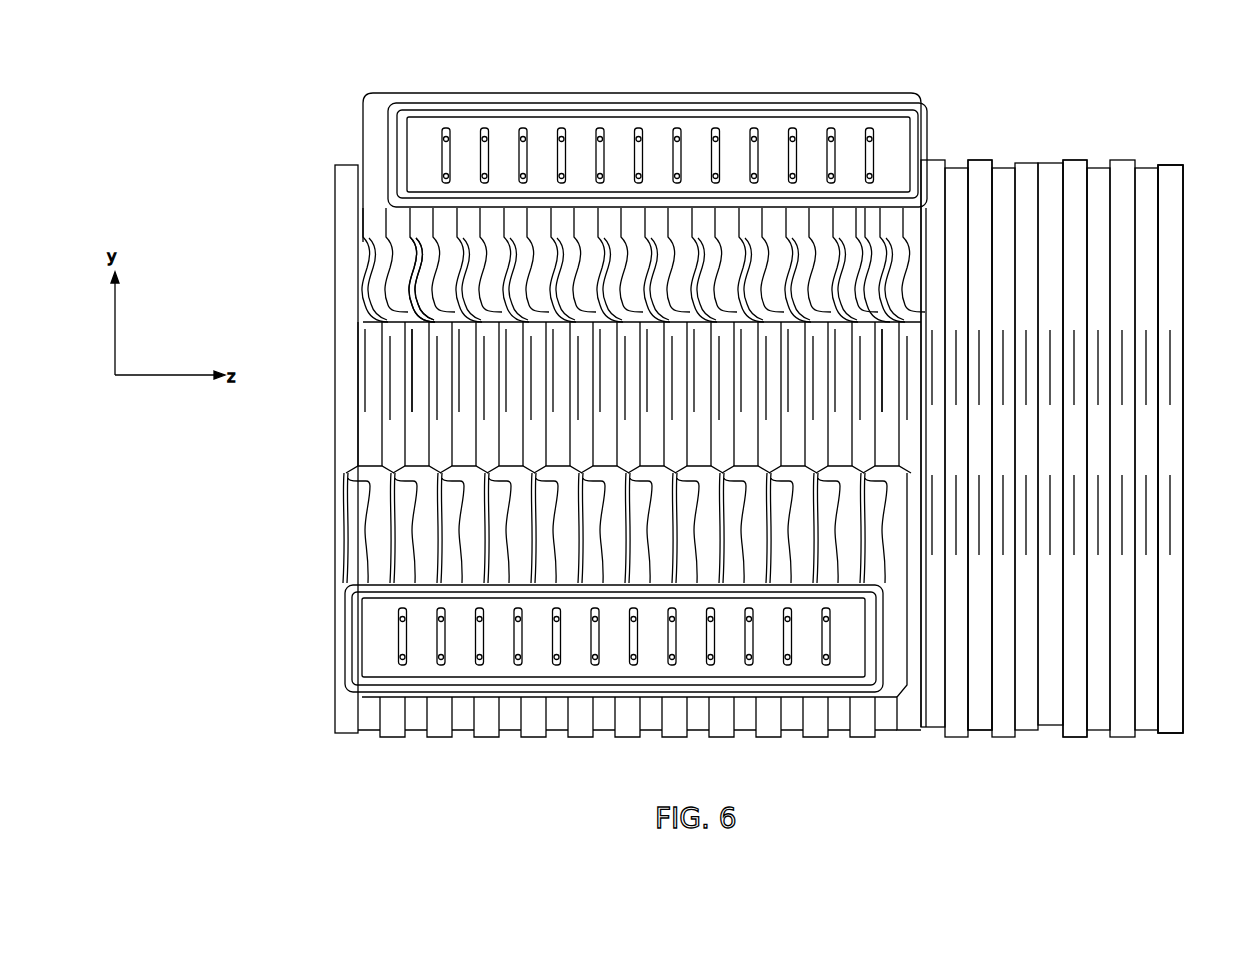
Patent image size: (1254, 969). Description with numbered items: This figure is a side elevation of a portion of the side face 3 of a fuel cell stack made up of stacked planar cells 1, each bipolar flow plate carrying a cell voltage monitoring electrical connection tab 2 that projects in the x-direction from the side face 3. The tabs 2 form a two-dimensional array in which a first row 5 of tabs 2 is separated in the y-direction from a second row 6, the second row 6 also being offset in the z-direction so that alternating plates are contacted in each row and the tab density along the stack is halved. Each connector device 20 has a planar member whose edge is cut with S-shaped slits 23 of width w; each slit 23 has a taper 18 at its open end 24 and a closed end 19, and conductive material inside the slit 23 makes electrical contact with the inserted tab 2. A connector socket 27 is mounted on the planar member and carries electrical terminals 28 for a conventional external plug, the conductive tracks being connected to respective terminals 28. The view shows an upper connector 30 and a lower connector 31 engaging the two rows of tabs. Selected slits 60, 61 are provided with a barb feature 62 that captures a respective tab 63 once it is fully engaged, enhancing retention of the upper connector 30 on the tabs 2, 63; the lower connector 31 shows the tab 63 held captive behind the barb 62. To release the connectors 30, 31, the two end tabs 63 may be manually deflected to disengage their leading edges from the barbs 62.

The cell 1 is at (984, 160).
The cell voltage monitoring electrical connection tab 2 is at (342, 408).
The side face 3 is at (1109, 249).
The first row 5 is at (1205, 359).
The second row 6 is at (1202, 534).
The taper 18 is at (408, 325).
The closed end 19 is at (410, 243).
The connector device 20 is at (372, 136).
The slit 23 is at (410, 252).
The open end 24 is at (360, 324).
The connector socket 27 is at (347, 678).
The electrical terminal 28 is at (400, 622).
The upper connector 30 is at (882, 103).
The lower connector 31 is at (887, 676).
The selected slit 60 is at (408, 298).
The selected slit 61 is at (893, 308).
The barb feature 62 is at (407, 305).
The tab 63 is at (410, 357).